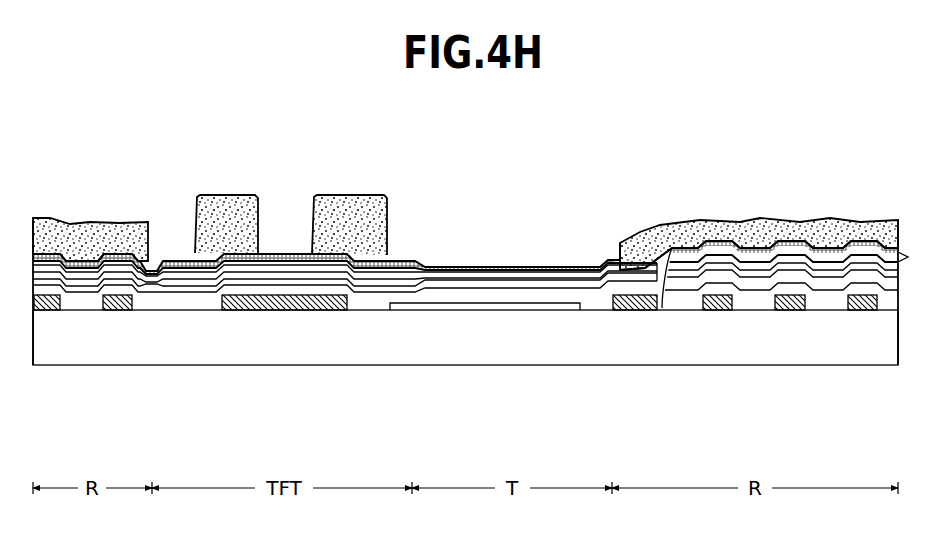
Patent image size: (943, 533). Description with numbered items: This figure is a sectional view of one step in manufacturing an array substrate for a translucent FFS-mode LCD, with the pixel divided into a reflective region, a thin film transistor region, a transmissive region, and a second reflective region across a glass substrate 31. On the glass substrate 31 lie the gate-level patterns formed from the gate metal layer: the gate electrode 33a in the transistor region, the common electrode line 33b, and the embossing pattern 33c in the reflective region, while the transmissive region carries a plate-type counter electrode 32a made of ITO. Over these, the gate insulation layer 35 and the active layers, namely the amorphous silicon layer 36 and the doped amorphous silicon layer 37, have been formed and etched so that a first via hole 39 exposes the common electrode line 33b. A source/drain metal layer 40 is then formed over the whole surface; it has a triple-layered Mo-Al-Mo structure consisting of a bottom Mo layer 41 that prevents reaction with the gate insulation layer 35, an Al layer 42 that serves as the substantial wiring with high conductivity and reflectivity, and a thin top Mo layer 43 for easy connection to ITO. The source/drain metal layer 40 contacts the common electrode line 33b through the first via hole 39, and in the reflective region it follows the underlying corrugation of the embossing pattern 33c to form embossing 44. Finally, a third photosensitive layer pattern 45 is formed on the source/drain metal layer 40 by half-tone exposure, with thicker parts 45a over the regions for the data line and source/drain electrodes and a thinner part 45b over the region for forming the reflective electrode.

The glass substrate 31 is at (716, 360).
The counter electrode 32a is at (578, 306).
The gate electrode 33a is at (254, 297).
The common electrode line 33b is at (634, 300).
The embossing pattern 33c is at (856, 306).
The gate insulation layer 35 is at (171, 293).
The amorphous silicon layer 36 is at (310, 271).
The doped amorphous silicon layer 37 is at (373, 277).
The first via hole 39 is at (638, 275).
The source/drain metal layer 40 is at (345, 357).
The bottom Mo layer 41 is at (456, 288).
The Al layer 42 is at (494, 283).
The top Mo layer 43 is at (532, 279).
The embossing 44 is at (763, 243).
The third photosensitive layer pattern 45 is at (433, 198).
The parts of third photosensitive layer pattern 45a is at (388, 235).
The part of third photosensitive layer pattern 45b is at (619, 262).